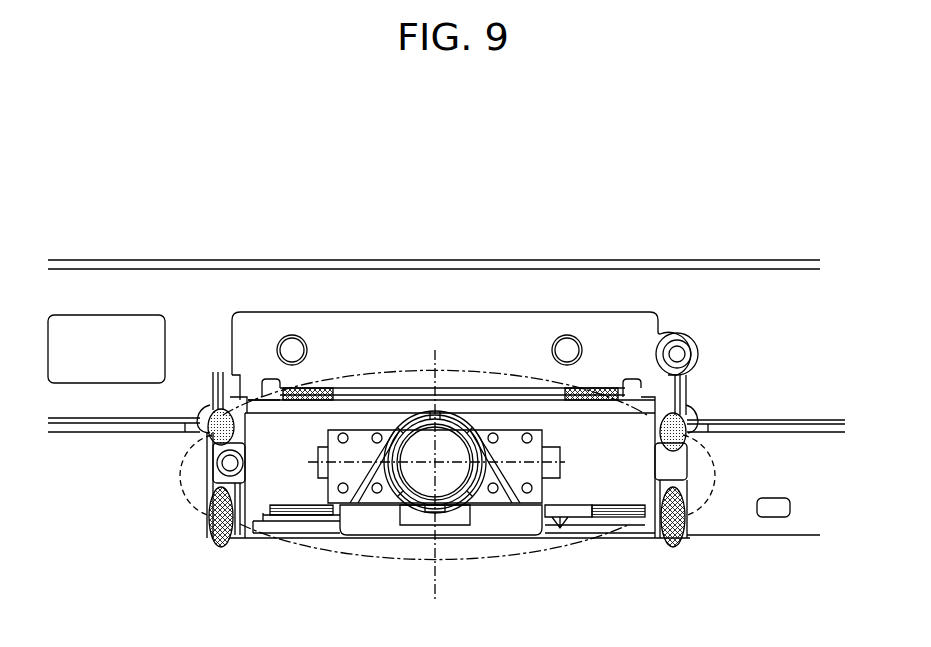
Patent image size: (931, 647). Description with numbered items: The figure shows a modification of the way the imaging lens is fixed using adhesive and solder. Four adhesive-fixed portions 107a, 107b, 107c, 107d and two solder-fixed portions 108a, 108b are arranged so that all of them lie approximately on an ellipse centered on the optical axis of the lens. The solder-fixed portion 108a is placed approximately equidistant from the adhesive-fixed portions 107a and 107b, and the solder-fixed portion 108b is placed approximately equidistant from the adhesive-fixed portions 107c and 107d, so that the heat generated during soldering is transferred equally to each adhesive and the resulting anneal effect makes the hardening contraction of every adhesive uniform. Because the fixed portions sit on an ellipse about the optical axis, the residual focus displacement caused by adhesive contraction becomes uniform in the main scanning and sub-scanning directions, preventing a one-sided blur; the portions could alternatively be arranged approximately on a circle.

The adhesive-fixed portion 107a is at (216, 548).
The adhesive-fixed portion 107b is at (674, 548).
The adhesive-fixed portion 107c is at (318, 388).
The adhesive-fixed portion 107d is at (598, 388).
The solder-fixed portion 108a is at (212, 410).
The solder-fixed portion 108b is at (690, 413).